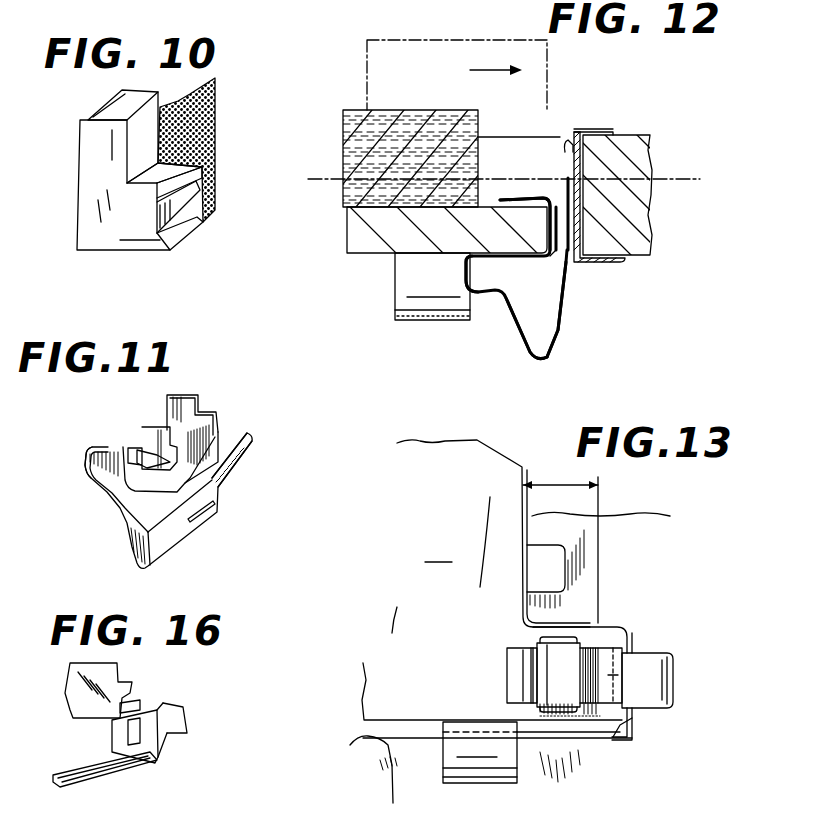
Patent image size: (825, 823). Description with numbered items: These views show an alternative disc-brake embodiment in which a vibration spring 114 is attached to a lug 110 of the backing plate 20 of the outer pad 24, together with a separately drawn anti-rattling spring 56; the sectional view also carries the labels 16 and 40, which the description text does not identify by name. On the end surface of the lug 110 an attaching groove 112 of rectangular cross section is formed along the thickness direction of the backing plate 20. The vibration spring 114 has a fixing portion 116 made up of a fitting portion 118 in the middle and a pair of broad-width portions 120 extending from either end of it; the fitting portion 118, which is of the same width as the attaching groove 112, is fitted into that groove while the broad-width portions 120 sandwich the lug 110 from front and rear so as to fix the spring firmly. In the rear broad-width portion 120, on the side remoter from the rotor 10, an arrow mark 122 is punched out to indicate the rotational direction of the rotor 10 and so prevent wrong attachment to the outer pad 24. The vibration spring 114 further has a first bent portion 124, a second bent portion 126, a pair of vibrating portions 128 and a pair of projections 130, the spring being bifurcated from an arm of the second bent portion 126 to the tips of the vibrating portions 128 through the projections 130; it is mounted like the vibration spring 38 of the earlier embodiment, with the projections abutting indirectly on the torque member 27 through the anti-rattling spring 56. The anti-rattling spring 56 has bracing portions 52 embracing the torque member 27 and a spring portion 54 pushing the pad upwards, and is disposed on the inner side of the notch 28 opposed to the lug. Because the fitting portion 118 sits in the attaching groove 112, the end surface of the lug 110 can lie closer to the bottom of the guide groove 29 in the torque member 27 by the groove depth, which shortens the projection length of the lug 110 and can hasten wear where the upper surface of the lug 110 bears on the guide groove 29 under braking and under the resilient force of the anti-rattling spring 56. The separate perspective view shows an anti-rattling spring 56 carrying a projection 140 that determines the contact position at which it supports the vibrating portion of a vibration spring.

In FIG. 12, the rotor 10 is at (473, 58).
In FIG. 10, the panel 16 is at (205, 120).
In FIG. 12, the panel 16 is at (402, 110).
In FIG. 10, the backing plate 20 is at (103, 165).
In FIG. 12, the backing plate 20 is at (372, 242).
In FIG. 13, the backing plate 20 is at (492, 608).
In FIG. 10, the outer pad 24 is at (172, 266).
In FIG. 12, the outer pad 24 is at (348, 102).
In FIG. 13, the outer pad 24 is at (522, 445).
In FIG. 12, the torque member 27 is at (632, 237).
In FIG. 13, the torque member 27 is at (653, 526).
In FIG. 13, the notch 28 is at (360, 740).
In FIG. 13, the guide groove 29 is at (622, 725).
In FIG. 12, the vibration spring 38 is at (495, 330).
In FIG. 12, the hook portion 40 is at (530, 197).
In FIG. 13, the bracing portions 52 is at (550, 557).
In FIG. 12, the spring portion 54 is at (430, 305).
In FIG. 13, the spring portion 54 is at (452, 762).
In FIG. 16, the anti-rattling spring 56 is at (137, 767).
In FIG. 12, the anti-rattling spring 56 is at (573, 133).
In FIG. 13, the anti-rattling spring 56 is at (644, 628).
In FIG. 10, the lug 110 is at (140, 237).
In FIG. 13, the lug 110 is at (583, 640).
In FIG. 10, the attaching groove 112 is at (183, 203).
In FIG. 11, the vibration spring 114 is at (93, 522).
In FIG. 13, the vibration spring 114 is at (495, 677).
In FIG. 11, the fixing portion 116 is at (222, 395).
In FIG. 11, the fitting portion 118 is at (207, 443).
In FIG. 12, the fitting portion 118 is at (557, 257).
In FIG. 11, the broad-width portions 120 is at (183, 403).
In FIG. 11, the arrow mark 122 is at (123, 443).
In FIG. 11, the first bent portion 124 is at (87, 487).
In FIG. 12, the first bent portion 124 is at (463, 270).
In FIG. 11, the second bent portion 126 is at (147, 547).
In FIG. 12, the second bent portion 126 is at (532, 360).
In FIG. 11, the vibrating portions 128 is at (252, 472).
In FIG. 12, the vibrating portions 128 is at (565, 180).
In FIG. 11, the projections 130 is at (213, 520).
In FIG. 12, the projections 130 is at (568, 267).
In FIG. 16, the projection 140 is at (140, 735).